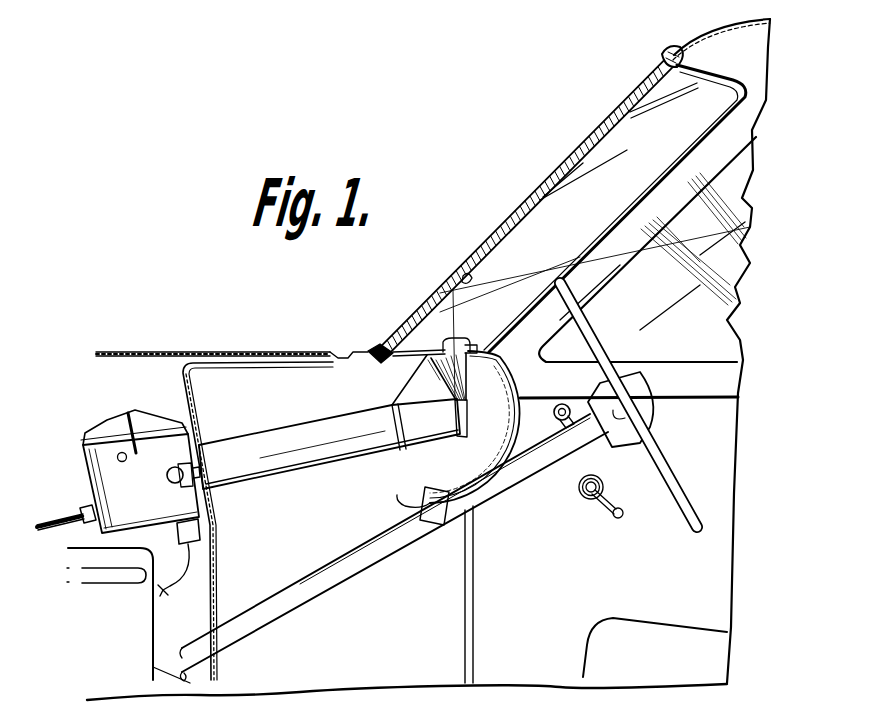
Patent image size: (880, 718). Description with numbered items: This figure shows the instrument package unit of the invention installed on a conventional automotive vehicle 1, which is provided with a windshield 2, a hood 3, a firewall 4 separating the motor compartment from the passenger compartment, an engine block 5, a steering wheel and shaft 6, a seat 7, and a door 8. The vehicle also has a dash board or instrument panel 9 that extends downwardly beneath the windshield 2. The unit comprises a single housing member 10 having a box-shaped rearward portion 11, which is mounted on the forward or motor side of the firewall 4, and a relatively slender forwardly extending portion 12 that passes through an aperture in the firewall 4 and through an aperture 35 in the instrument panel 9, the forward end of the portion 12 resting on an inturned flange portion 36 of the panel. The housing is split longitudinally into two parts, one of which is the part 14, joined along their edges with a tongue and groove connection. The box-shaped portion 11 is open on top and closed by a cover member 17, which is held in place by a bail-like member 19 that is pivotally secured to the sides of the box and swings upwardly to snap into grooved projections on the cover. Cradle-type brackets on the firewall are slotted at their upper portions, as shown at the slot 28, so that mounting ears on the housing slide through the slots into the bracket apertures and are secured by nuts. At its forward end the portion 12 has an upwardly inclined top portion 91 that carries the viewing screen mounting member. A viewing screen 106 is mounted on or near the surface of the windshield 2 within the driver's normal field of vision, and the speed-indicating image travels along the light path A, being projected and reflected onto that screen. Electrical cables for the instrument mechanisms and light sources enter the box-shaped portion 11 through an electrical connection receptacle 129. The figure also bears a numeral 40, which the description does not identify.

The automotive vehicle 1 is at (669, 50).
The windshield 2 is at (591, 138).
The hood 3 is at (163, 351).
The firewall 4 is at (216, 572).
The engine block 5 is at (120, 645).
The steering wheel and shaft 6 is at (670, 464).
The seat 7 is at (583, 642).
The door 8 is at (556, 570).
The instrument panel 9 is at (417, 350).
The upwardly inclined top portion 91 is at (406, 385).
The viewing screen 106 is at (467, 275).
The housing member 10 is at (246, 423).
The forwardly extending portion 12 is at (328, 423).
The box-shaped rearward portion 11 is at (77, 472).
The housing part 14 is at (150, 517).
The cover member 17 is at (110, 423).
The bail-like member 19 is at (140, 413).
The slot 28 is at (170, 466).
The aperture 35 is at (467, 433).
The inturned flange portion 36 is at (443, 449).
The control rod 40 is at (58, 530).
The electrical connection receptacle 129 is at (200, 527).
The light path A is at (455, 318).